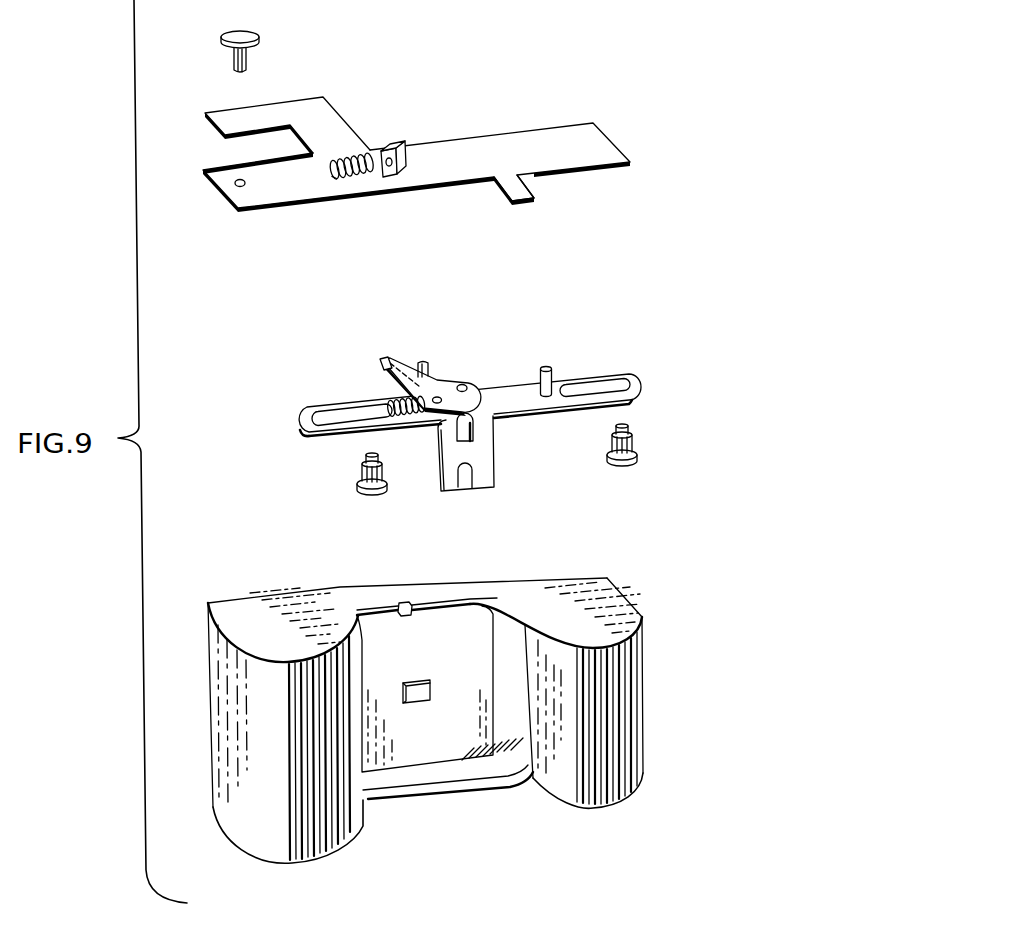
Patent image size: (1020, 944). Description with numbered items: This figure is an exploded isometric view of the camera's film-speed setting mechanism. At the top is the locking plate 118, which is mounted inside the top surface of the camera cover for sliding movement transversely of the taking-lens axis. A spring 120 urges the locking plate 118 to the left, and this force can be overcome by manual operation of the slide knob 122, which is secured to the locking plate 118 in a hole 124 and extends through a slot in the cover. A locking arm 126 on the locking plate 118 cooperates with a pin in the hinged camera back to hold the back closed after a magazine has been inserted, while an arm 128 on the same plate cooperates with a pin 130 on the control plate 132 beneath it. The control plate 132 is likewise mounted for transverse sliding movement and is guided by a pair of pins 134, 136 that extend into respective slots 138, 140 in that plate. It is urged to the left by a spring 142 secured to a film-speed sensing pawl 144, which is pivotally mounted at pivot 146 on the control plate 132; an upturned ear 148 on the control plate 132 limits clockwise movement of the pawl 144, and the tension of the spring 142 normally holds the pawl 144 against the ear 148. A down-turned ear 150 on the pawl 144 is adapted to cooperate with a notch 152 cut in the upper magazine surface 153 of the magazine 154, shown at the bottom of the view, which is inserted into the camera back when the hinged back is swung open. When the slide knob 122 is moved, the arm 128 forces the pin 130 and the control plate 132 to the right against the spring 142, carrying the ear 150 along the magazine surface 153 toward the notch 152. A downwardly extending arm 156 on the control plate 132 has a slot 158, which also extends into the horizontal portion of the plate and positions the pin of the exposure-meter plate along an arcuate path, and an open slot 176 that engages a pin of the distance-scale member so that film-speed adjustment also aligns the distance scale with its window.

The locking plate 118 is at (456, 140).
The spring 120 is at (356, 156).
The slide knob 122 is at (233, 33).
The hole 124 is at (235, 186).
The locking arm 126 is at (303, 104).
The arm 128 is at (503, 199).
The pin 130 is at (550, 367).
The control plate 132 is at (468, 429).
The pin 134 is at (358, 494).
The pin 136 is at (638, 460).
The slot 138 is at (317, 428).
The slot 140 is at (597, 379).
The spring 142 is at (432, 401).
The film-speed sensing pawl 144 is at (428, 374).
The pivot 146 is at (478, 382).
The upturned ear 148 is at (422, 362).
The down-turned ear 150 is at (381, 366).
The notch 152 is at (405, 602).
The magazine surface 153 is at (467, 603).
The magazine 154 is at (278, 745).
The downwardly extending arm 156 is at (441, 458).
The slot 158 is at (454, 434).
The open slot 176 is at (462, 481).